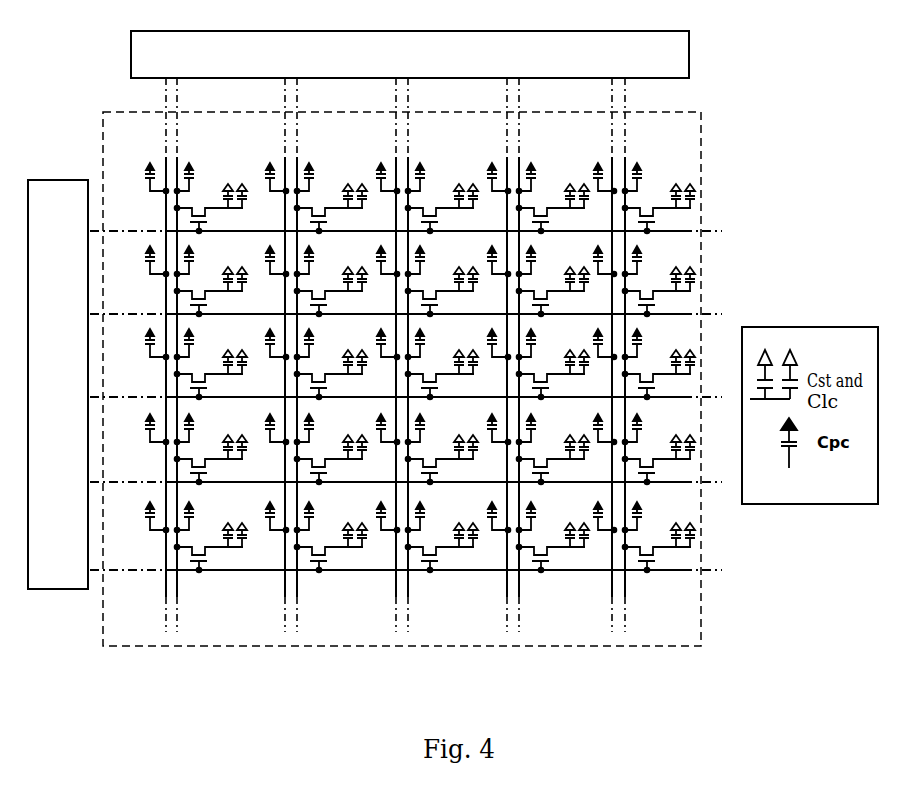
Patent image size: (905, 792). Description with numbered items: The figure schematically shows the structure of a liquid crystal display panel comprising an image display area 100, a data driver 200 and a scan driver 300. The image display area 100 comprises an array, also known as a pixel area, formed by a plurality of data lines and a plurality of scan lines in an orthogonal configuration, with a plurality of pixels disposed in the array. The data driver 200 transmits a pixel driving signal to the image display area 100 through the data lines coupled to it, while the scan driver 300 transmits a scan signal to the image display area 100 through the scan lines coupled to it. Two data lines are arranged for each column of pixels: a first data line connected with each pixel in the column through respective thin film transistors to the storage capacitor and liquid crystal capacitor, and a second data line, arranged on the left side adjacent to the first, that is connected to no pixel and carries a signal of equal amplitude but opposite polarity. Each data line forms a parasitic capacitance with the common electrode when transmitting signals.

The image display area 100 is at (700, 183).
The data driver 200 is at (410, 54).
The scan driver 300 is at (58, 384).